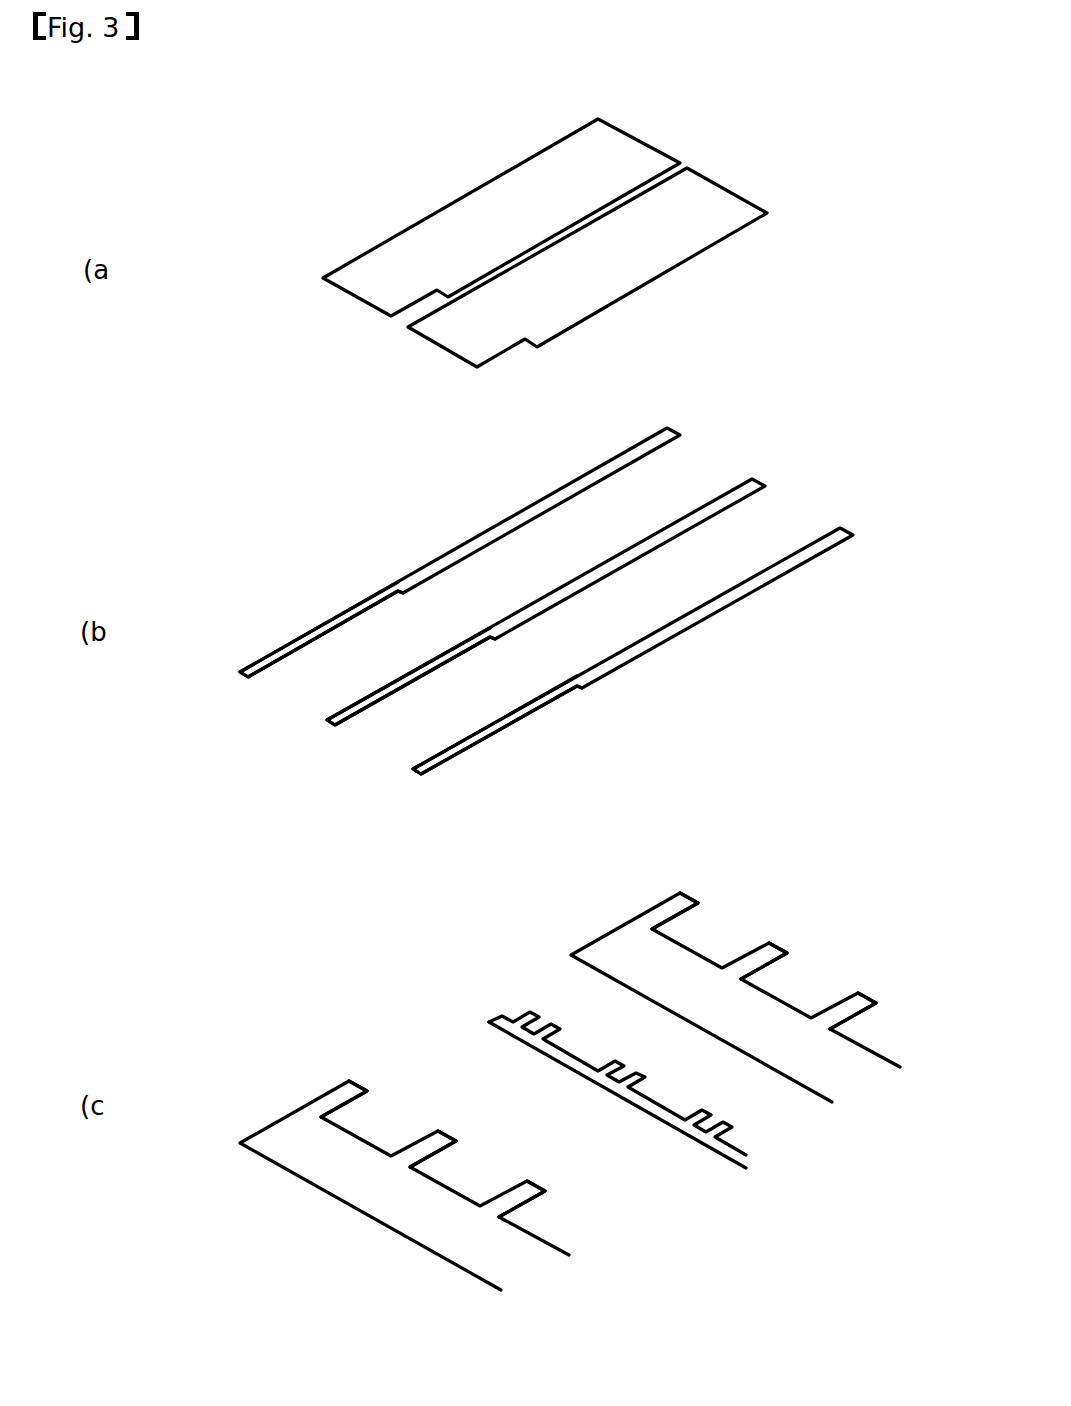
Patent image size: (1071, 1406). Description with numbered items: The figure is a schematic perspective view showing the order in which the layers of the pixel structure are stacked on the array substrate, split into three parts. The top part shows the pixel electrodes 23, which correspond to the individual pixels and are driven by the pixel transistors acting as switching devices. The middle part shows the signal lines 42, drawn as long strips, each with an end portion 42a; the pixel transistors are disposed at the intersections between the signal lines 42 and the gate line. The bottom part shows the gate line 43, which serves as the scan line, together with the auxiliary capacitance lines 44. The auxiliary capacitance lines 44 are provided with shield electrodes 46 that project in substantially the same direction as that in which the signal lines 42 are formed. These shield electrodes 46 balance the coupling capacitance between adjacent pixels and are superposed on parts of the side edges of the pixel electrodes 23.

The pixel electrode 23 is at (510, 172).
The signal line 42 is at (678, 433).
The lead strip tab portion 42a is at (308, 635).
The gate line 43 is at (490, 1019).
The auxiliary capacitance line 44 is at (598, 947).
The shield electrode 46 is at (680, 900).